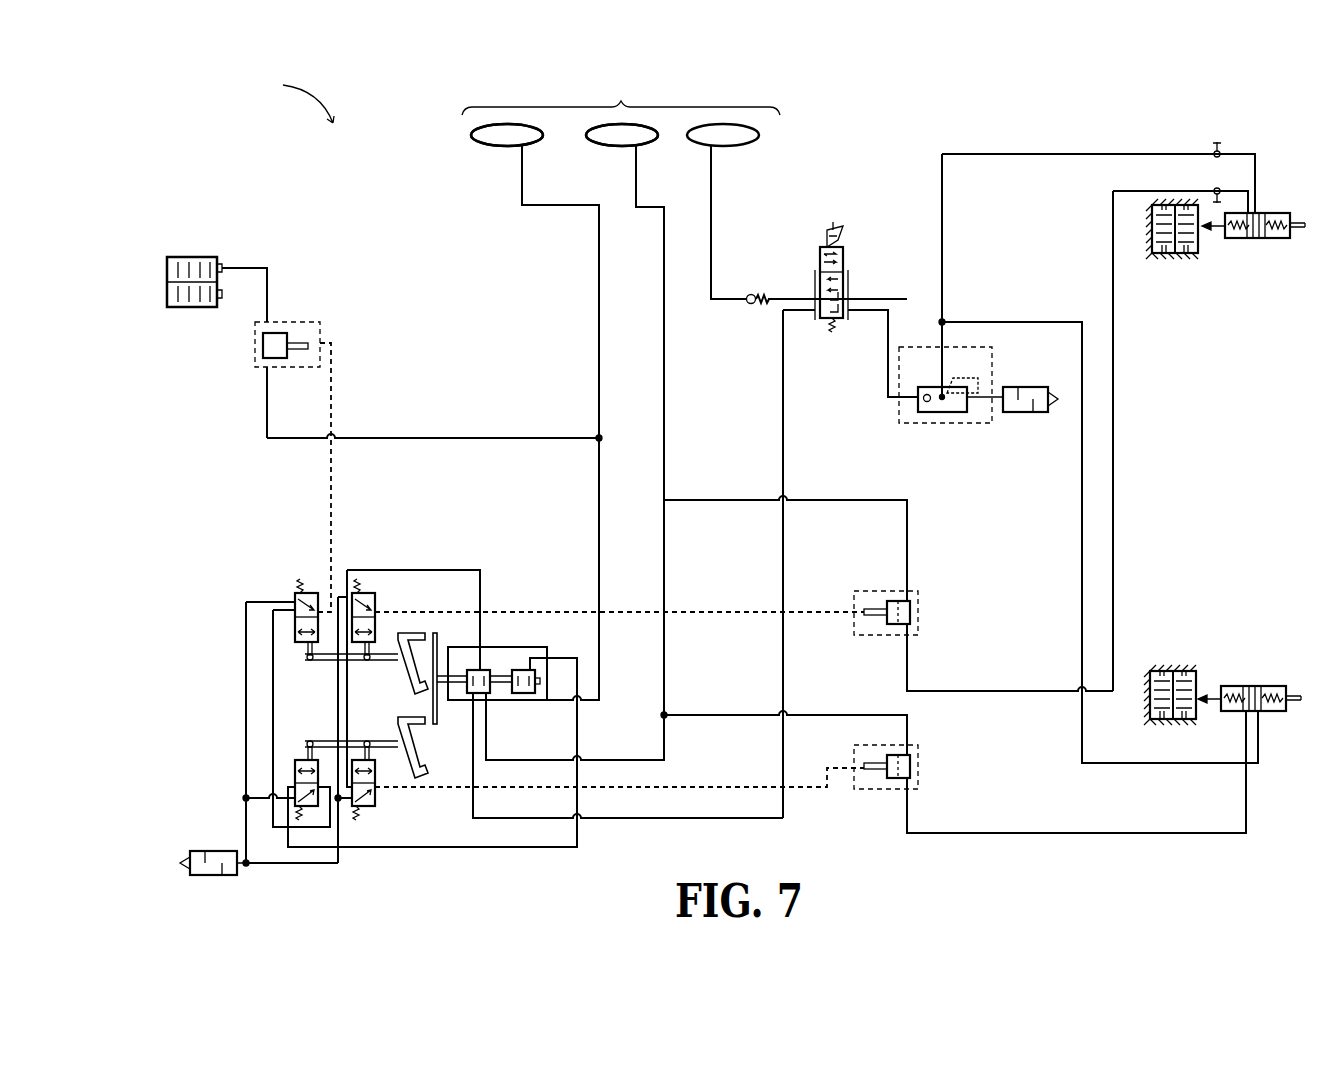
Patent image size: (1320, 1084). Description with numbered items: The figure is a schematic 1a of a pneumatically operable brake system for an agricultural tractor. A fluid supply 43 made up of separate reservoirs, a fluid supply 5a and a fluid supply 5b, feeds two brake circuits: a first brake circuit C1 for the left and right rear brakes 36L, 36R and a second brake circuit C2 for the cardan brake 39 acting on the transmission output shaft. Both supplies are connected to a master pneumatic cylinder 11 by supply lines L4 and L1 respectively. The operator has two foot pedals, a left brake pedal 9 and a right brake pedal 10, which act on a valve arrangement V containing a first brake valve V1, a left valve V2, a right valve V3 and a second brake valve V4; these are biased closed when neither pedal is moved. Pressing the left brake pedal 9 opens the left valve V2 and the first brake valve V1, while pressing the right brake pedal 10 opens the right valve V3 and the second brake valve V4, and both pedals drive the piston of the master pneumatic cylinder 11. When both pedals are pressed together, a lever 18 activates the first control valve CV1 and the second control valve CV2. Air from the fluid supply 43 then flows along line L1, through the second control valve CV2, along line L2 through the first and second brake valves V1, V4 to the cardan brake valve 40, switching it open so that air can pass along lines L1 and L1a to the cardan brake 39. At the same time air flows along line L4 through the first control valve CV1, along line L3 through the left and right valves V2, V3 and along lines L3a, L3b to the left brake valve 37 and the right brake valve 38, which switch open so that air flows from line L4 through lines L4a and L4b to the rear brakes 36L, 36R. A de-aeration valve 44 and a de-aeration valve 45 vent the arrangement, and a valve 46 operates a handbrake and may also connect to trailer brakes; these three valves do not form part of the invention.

The schematic of pneumatically operable brake system 1a is at (294, 98).
The fluid supply 43 is at (621, 111).
The fluid supply 5b is at (493, 148).
The fluid supply 5a is at (608, 148).
The cardan brake 39 is at (192, 257).
The cardan brake valve 40 is at (317, 333).
The supply line L1 is at (599, 340).
The supply line L1a is at (400, 438).
The second brake circuit C2 is at (599, 405).
The supply line L4 is at (664, 365).
The first brake circuit C1 is at (664, 428).
The valve 46 is at (840, 228).
The de-aeration valve 45 is at (1013, 387).
The right rear brake 36R is at (1202, 247).
The left rear brake 36L is at (1183, 670).
The right brake valve 38 is at (917, 610).
The left brake valve 37 is at (917, 765).
The supply line L4a is at (850, 500).
The supply line L4b is at (812, 715).
The supply line L3a is at (690, 612).
The supply line L3b is at (690, 787).
The supply line L3 is at (444, 569).
The supply line L2 is at (333, 501).
The valve arrangement V is at (234, 563).
The second brake valve V4 is at (298, 592).
The right valve V3 is at (360, 592).
The first brake valve V1 is at (297, 775).
The left valve V2 is at (375, 796).
The right brake pedal 10 is at (403, 633).
The left brake pedal 9 is at (410, 755).
The lever 18 is at (440, 640).
The first control valve CV1 is at (480, 670).
The second control valve CV2 is at (530, 670).
The master pneumatic cylinder 11 is at (505, 705).
The de-aeration valve 44 is at (205, 851).